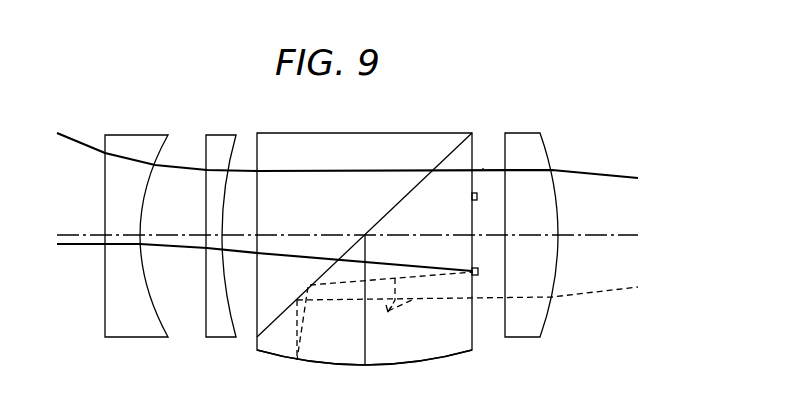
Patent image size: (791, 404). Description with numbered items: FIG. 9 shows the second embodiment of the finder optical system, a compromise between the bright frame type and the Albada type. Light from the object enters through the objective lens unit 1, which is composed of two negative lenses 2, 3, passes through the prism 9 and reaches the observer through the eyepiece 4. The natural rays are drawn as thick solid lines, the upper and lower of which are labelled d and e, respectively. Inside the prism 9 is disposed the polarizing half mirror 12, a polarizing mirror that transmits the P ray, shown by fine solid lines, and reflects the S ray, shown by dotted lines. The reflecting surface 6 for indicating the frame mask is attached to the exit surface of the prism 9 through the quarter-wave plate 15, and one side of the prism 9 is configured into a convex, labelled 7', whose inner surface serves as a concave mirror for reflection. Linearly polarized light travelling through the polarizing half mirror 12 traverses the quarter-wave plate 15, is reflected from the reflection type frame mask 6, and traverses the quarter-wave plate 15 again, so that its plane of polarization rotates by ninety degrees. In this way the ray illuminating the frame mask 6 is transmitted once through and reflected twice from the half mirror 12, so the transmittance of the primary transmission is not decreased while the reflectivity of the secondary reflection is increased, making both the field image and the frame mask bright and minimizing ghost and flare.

The objective lens unit 1 is at (173, 235).
The negative lens 2 is at (138, 338).
The negative lens 3 is at (220, 338).
The eyepiece 4 is at (528, 133).
The reflecting surface for indicating the frame mask 6 is at (478, 197).
The prism 9 is at (387, 132).
The polarizing half mirror 12 is at (407, 195).
The quarter-wave plate 15 is at (474, 267).
The curved exit surface 7' is at (365, 368).
The P ray P is at (483, 168).
The S ray S is at (384, 320).
The ray d is at (339, 149).
The ray e is at (255, 253).